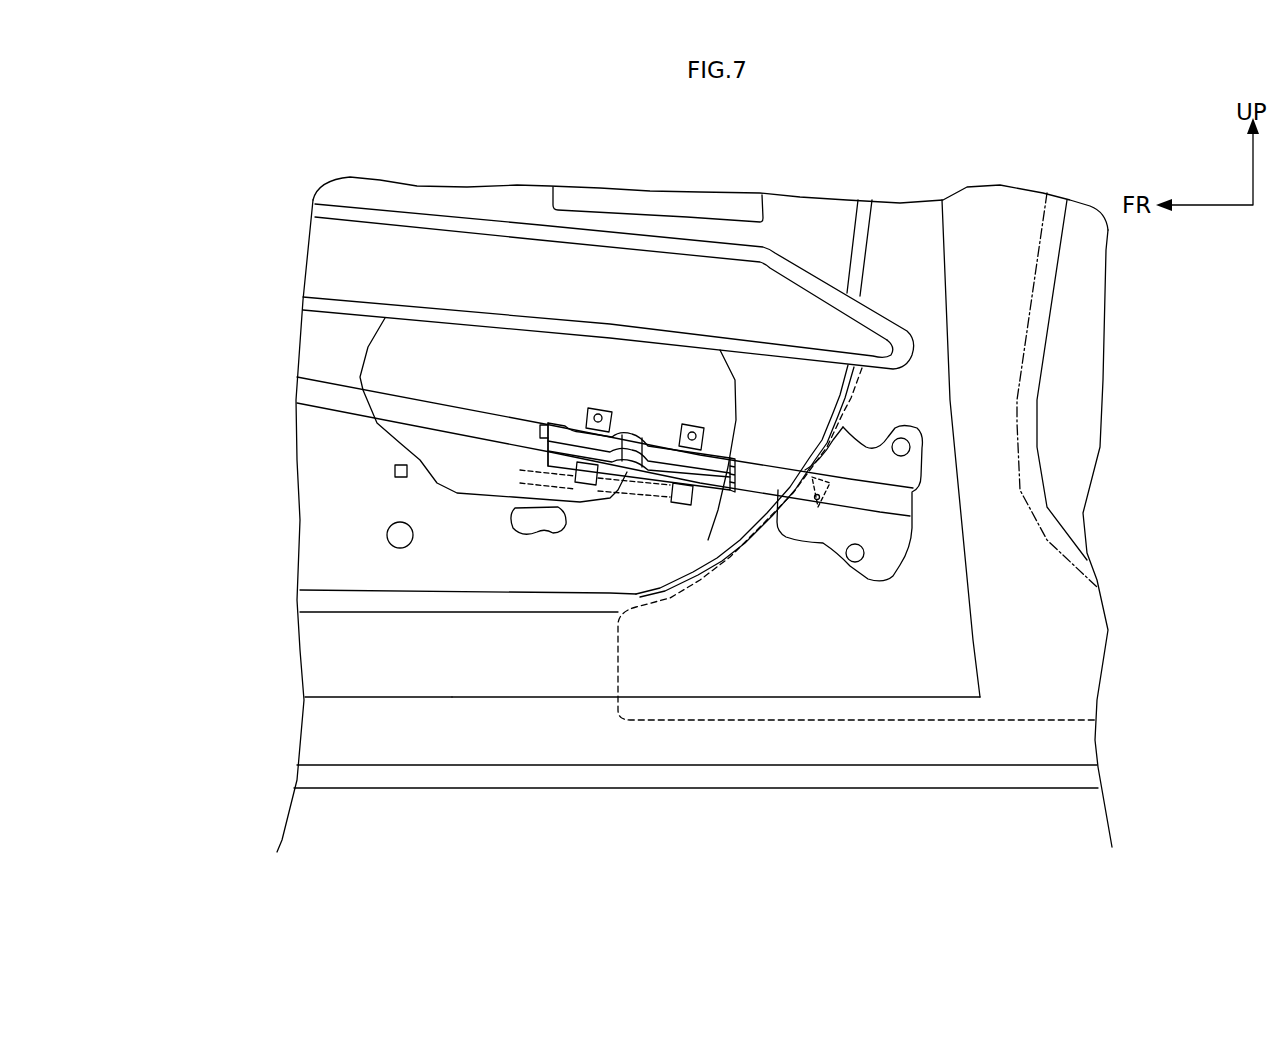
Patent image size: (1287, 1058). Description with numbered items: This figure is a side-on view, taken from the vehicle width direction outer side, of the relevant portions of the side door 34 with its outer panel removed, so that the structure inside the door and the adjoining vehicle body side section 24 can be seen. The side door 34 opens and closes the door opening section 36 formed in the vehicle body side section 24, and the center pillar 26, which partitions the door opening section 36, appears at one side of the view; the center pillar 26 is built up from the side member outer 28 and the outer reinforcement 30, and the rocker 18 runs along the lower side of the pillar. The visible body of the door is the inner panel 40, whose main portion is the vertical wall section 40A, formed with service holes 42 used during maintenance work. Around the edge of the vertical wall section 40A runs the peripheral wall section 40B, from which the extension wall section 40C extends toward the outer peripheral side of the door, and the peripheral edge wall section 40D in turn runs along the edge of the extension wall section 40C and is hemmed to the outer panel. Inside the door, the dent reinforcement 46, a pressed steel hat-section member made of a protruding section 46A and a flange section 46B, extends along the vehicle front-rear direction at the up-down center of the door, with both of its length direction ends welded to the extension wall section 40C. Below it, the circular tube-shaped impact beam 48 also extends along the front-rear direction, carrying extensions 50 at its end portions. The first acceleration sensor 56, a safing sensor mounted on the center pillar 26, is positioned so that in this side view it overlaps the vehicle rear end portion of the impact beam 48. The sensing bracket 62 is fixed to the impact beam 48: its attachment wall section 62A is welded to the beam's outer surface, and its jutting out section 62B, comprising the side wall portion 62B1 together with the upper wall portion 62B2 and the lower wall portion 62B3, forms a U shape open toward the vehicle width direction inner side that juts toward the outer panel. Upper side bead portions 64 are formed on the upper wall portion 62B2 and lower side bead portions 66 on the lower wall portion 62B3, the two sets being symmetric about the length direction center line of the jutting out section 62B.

The rocker 18 is at (650, 747).
The vehicle body side section 24 is at (1073, 145).
The center pillar 26 is at (1052, 323).
The side member outer panel 28 is at (988, 268).
The center pillar outer reinforcement 30 is at (1020, 438).
The front side door 34 is at (281, 442).
The door opening section 36 is at (868, 285).
The inner panel 40 is at (322, 648).
The vertical wall section 40A is at (333, 523).
The peripheral wall section 40B is at (303, 600).
The extension wall section 40C is at (327, 673).
The peripheral edge wall section 40D is at (452, 697).
The service hole 42 is at (687, 217).
The dent reinforcement 46 is at (468, 215).
The protruding section 46A is at (343, 253).
The flange section 46B is at (340, 200).
The impact beam 48 is at (300, 390).
The extension 50 is at (883, 553).
The first acceleration sensor 56 is at (815, 480).
The sensing bracket 62 is at (650, 424).
The attachment wall section 62A is at (612, 408).
The jutting out section 62B is at (546, 432).
The side wall portion 62B1 is at (734, 490).
The upper wall portion 62B2 is at (632, 438).
The lower wall portion 62B3 is at (616, 492).
The upper side bead portion 64 is at (565, 417).
The lower side bead portion 66 is at (548, 460).